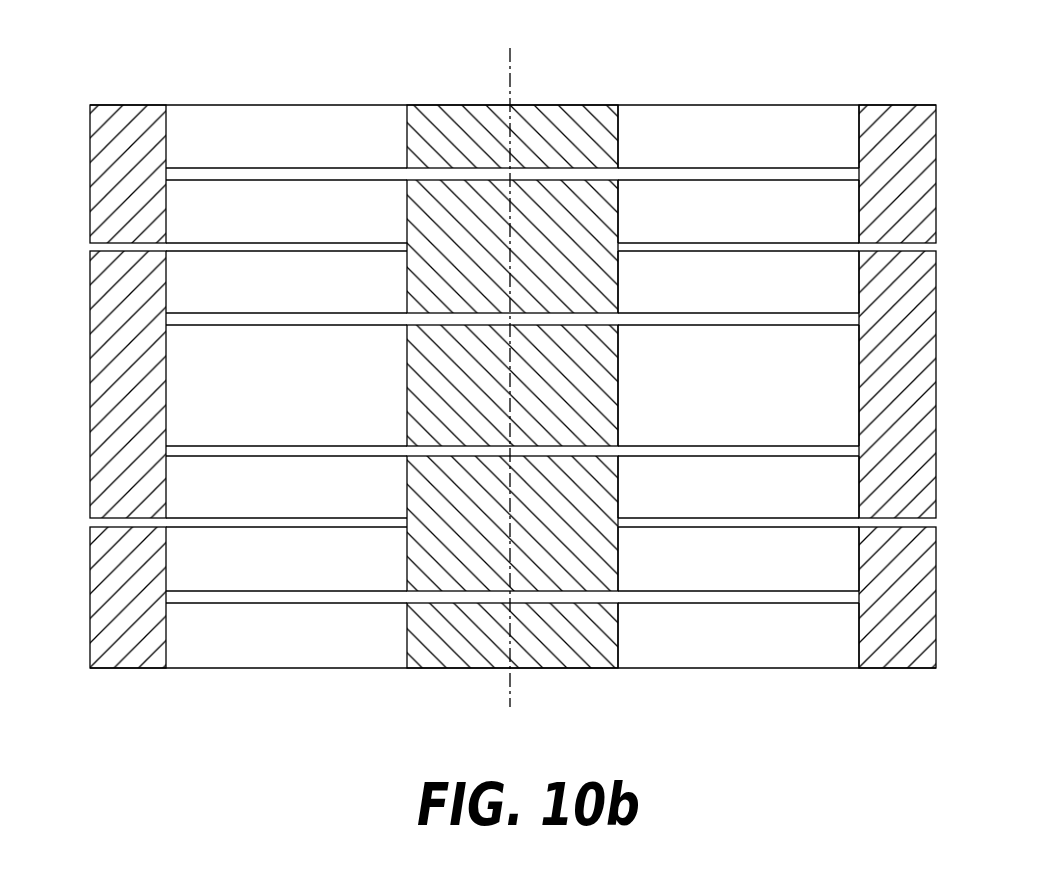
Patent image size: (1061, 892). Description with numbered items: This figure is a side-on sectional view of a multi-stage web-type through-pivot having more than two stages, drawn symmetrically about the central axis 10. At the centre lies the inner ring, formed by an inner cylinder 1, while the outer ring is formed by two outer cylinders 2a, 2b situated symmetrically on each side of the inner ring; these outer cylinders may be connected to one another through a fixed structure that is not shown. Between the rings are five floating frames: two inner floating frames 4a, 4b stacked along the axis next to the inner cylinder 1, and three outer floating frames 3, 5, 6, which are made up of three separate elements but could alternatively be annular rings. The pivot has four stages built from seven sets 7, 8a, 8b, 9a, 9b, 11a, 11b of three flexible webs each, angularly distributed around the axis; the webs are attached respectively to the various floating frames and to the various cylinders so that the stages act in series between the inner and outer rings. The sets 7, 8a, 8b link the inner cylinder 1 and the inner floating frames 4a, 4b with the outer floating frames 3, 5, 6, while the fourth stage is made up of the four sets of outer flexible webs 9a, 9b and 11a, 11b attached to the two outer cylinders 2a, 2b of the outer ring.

The inner cylinder 1 is at (430, 372).
The outer cylinder 2a is at (410, 635).
The outer cylinder 2b is at (425, 152).
The outer floating frame 3 is at (915, 352).
The inner floating frame 4a is at (430, 478).
The inner floating frame 4b is at (465, 265).
The outer floating frame 5 is at (913, 593).
The outer floating frame 6 is at (908, 175).
The set of flexible webs 7 is at (835, 390).
The set of flexible webs 8a is at (840, 473).
The set of flexible webs 8b is at (845, 290).
The set of outer flexible webs 9a is at (783, 567).
The set of outer flexible webs 9b is at (688, 207).
The central axis 10 is at (508, 690).
The set of outer flexible webs 11a is at (687, 645).
The set of outer flexible webs 11b is at (750, 130).